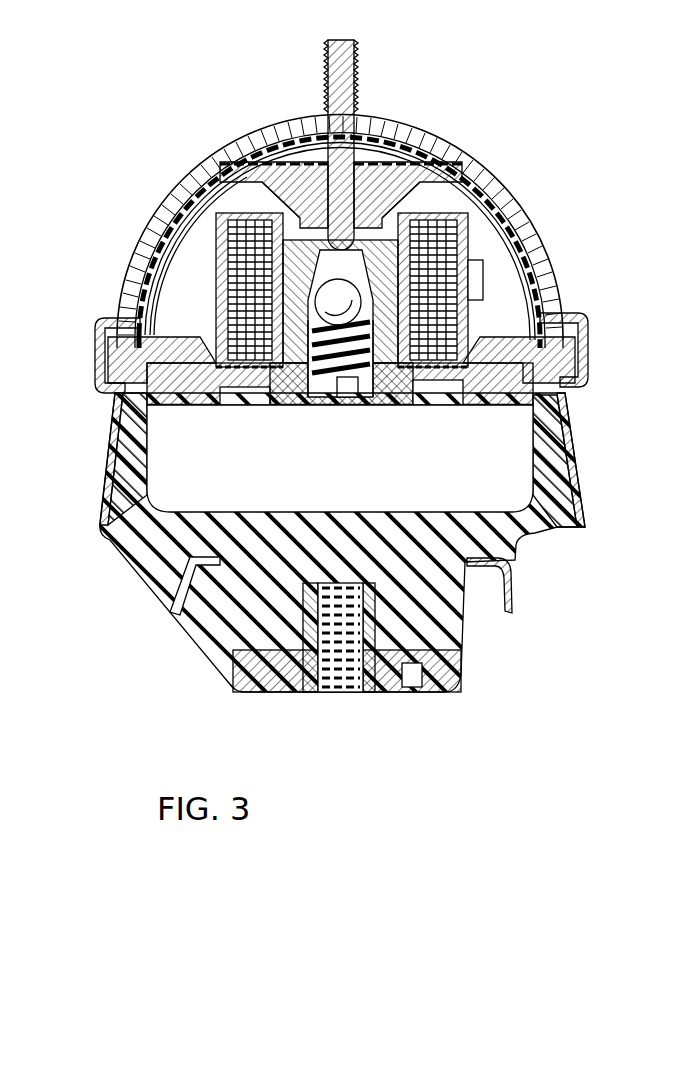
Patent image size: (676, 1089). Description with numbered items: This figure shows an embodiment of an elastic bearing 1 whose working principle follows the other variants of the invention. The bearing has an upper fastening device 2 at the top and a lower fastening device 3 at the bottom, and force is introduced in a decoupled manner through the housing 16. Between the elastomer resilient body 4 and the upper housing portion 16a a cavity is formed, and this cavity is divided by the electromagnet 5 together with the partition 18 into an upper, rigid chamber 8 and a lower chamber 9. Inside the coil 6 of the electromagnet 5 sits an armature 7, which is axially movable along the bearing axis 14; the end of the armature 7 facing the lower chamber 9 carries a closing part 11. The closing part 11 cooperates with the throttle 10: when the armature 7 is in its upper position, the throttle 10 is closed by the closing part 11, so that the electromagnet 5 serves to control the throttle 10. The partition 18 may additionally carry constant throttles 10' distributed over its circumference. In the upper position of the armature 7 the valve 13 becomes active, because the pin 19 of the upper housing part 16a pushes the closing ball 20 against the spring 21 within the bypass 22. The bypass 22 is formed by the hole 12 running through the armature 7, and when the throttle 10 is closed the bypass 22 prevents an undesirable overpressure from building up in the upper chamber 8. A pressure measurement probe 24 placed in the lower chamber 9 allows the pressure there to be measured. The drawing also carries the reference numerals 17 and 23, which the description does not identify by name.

The elastic bearing 1 is at (505, 128).
The upper fastening device 2 is at (340, 40).
The lower fastening device 3 is at (341, 700).
The elastomer resilient body 4 is at (160, 570).
The electromagnet 5 is at (470, 187).
The coil 6 is at (490, 213).
The armature 7 is at (472, 252).
The upper chamber 8 is at (172, 218).
The lower chamber 9 is at (175, 455).
The throttle 10 is at (184, 290).
The constant throttles 10' is at (317, 303).
The closing part 11 is at (228, 300).
The hole 12 is at (296, 405).
The valve 13 is at (378, 440).
The bearing axis 14 is at (390, 405).
The housing 16 is at (576, 390).
The upper housing portion 16a is at (272, 126).
The cover plate 17 is at (237, 164).
The partition 18 is at (115, 392).
The pin 19 is at (393, 172).
The closing ball 20 is at (430, 180).
The spring 21 is at (333, 405).
The bypass 22 is at (359, 396).
The spacer ring 23 is at (436, 405).
The pressure measurement probe 24 is at (483, 283).